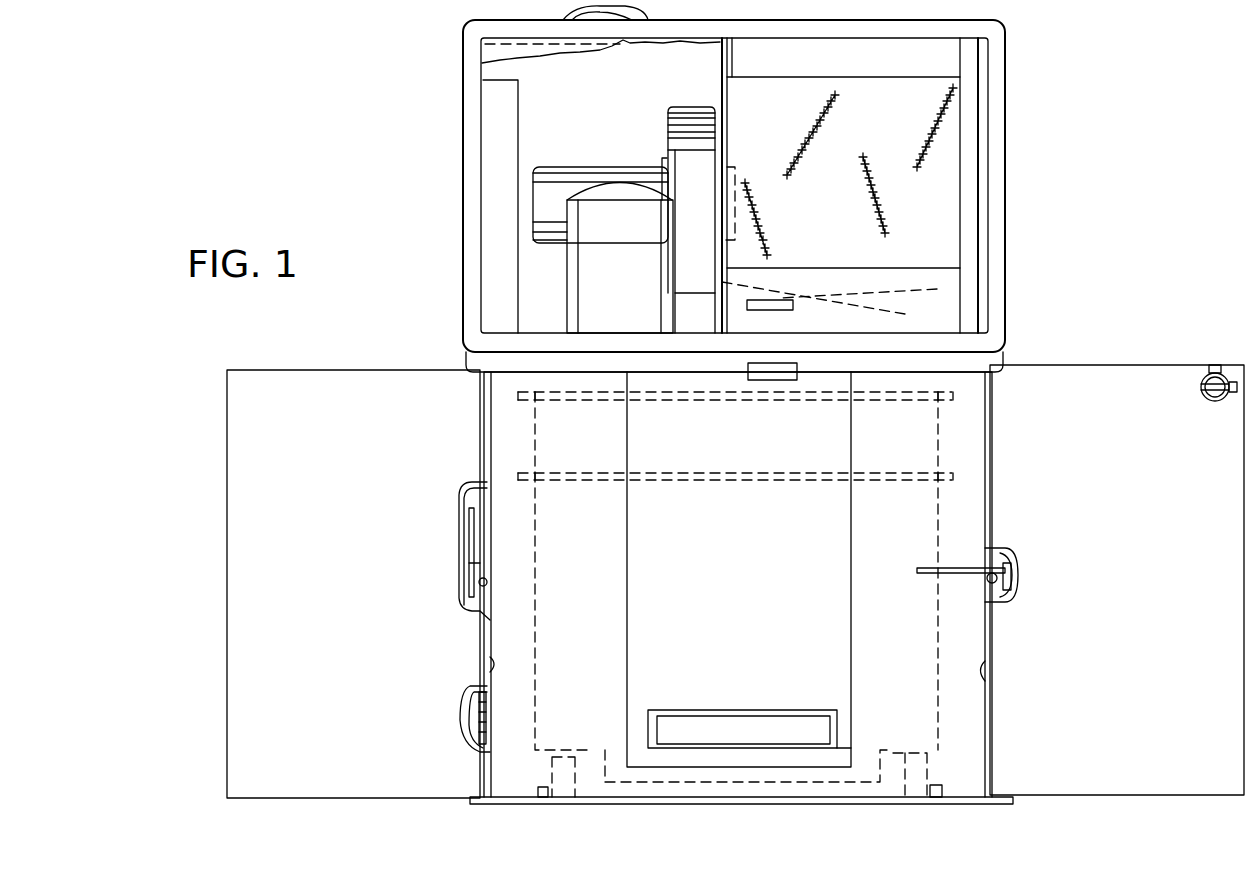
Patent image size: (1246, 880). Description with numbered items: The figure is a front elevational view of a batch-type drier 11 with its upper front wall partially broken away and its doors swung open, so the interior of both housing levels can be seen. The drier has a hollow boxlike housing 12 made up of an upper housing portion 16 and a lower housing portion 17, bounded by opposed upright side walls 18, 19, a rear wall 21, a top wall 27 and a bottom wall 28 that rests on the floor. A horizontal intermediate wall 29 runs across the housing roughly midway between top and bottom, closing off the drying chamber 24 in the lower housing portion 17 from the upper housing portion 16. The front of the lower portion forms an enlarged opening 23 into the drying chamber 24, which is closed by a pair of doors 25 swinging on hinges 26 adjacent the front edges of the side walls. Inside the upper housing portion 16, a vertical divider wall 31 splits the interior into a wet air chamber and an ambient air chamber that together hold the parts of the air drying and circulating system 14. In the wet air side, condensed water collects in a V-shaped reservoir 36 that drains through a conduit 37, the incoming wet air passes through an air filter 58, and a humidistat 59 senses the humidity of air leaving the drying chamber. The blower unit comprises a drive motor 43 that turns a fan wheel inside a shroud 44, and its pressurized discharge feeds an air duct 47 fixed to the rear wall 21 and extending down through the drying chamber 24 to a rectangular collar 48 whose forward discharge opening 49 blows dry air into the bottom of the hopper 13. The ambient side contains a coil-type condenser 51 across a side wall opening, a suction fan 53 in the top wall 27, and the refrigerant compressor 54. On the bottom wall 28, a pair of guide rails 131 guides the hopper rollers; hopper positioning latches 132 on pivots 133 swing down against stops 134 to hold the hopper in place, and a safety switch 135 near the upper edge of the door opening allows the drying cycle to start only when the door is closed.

The batch-type drier 11 is at (763, 196).
The housing 12 is at (462, 297).
The roller-supported hopper 13 is at (938, 513).
The air drying and circulating system 14 is at (857, 65).
The upper housing portion 16 is at (725, 196).
The lower housing portion 17 is at (774, 588).
The side wall 18 is at (490, 664).
The side wall 19 is at (990, 660).
The rear wall 21 is at (960, 767).
The opening 23 is at (967, 423).
The drying chamber 24 is at (500, 430).
The doors 25 is at (270, 381).
The hinges 26 is at (481, 717).
The top wall 27 is at (925, 28).
The bottom wall 28 is at (894, 802).
The intermediate wall 29 is at (594, 357).
The divider wall 31 is at (727, 58).
The reservoir 36 is at (935, 289).
The conduit 37 is at (829, 304).
The drive motor 43 is at (573, 185).
The shroud 44 is at (700, 128).
The air duct 47 is at (835, 516).
The collar 48 is at (826, 708).
The discharge opening 49 is at (705, 716).
The condenser 51 is at (497, 133).
The suction fan 53 is at (612, 10).
The compressor 54 is at (600, 291).
The air filter 58 is at (960, 150).
The humidistat 59 is at (780, 300).
The guide rails 131 is at (545, 797).
The hopper positioning latches 132 is at (478, 522).
The pivots 133 is at (490, 583).
The stops 134 is at (1009, 567).
The safety switch 135 is at (780, 380).